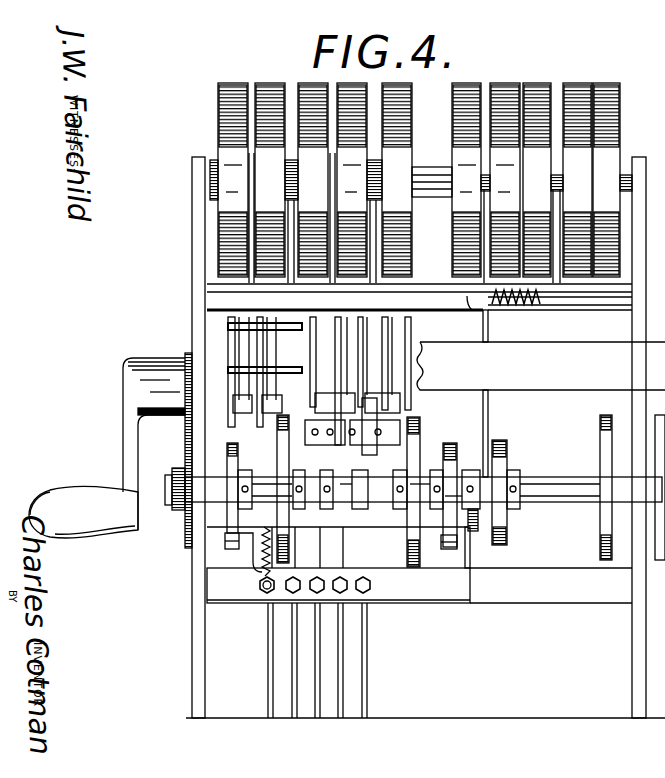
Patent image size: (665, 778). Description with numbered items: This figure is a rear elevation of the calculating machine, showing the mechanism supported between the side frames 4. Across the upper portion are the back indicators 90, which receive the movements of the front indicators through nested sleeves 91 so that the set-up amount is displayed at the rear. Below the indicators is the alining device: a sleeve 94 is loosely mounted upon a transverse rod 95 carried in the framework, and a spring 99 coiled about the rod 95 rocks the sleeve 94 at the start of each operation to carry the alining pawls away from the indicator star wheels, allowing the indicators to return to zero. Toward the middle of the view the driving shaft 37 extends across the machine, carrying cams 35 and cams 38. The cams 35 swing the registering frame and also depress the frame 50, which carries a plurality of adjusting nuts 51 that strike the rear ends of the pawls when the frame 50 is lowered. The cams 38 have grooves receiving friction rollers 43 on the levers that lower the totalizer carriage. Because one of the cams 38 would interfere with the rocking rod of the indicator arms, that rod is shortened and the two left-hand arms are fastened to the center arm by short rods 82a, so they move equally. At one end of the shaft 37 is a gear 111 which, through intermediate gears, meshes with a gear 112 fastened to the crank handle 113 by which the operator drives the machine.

The side frames 4 is at (636, 668).
The back indicators 90 is at (537, 83).
The nested sleeves 91 is at (437, 170).
The sleeve 94 is at (469, 302).
The transverse rod 95 is at (583, 306).
The spring 99 is at (516, 319).
The short rods 82a is at (232, 330).
The gear 112 is at (185, 356).
The crank handle 113 is at (55, 505).
The gear 111 is at (185, 552).
The driving shaft 37 is at (544, 502).
The cams 38 is at (278, 452).
The cams 35 is at (228, 520).
The friction rollers 43 is at (232, 548).
The frame 50 is at (437, 590).
The adjusting nuts 51 is at (262, 588).